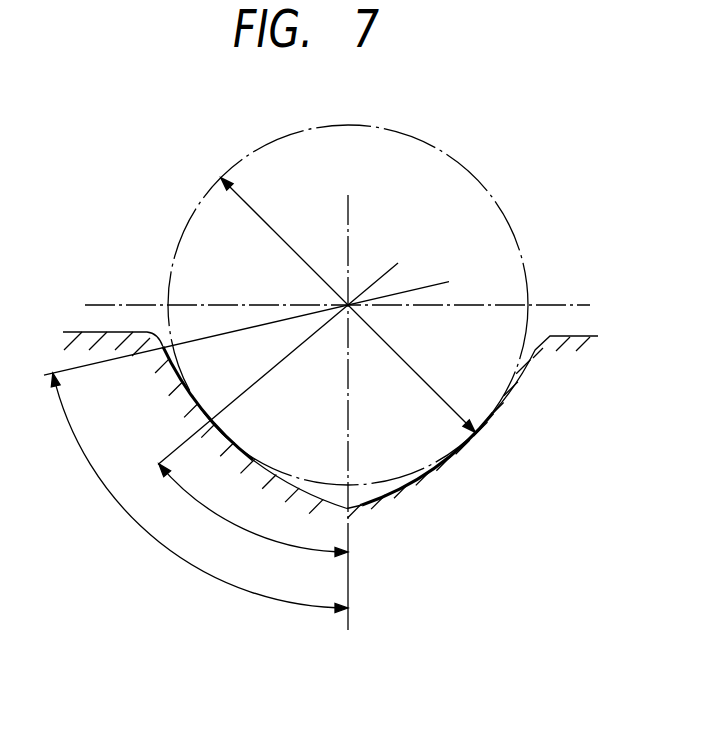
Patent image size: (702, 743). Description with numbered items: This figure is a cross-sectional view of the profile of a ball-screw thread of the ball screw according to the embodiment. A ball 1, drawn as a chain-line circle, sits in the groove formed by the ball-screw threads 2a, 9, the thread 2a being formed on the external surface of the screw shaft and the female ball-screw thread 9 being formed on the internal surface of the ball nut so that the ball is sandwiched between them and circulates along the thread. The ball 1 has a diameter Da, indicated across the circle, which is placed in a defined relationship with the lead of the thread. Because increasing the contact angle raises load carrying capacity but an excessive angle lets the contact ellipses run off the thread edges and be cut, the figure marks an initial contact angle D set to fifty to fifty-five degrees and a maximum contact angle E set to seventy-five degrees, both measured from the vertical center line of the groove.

The ball 1 is at (426, 146).
The ball-screw thread of the screw shaft 2a is at (330, 451).
The female ball-screw thread 9 is at (415, 486).
The ball diameter Da is at (348, 305).
The maximum contact angle E is at (177, 556).
The initial contact angle D is at (278, 543).